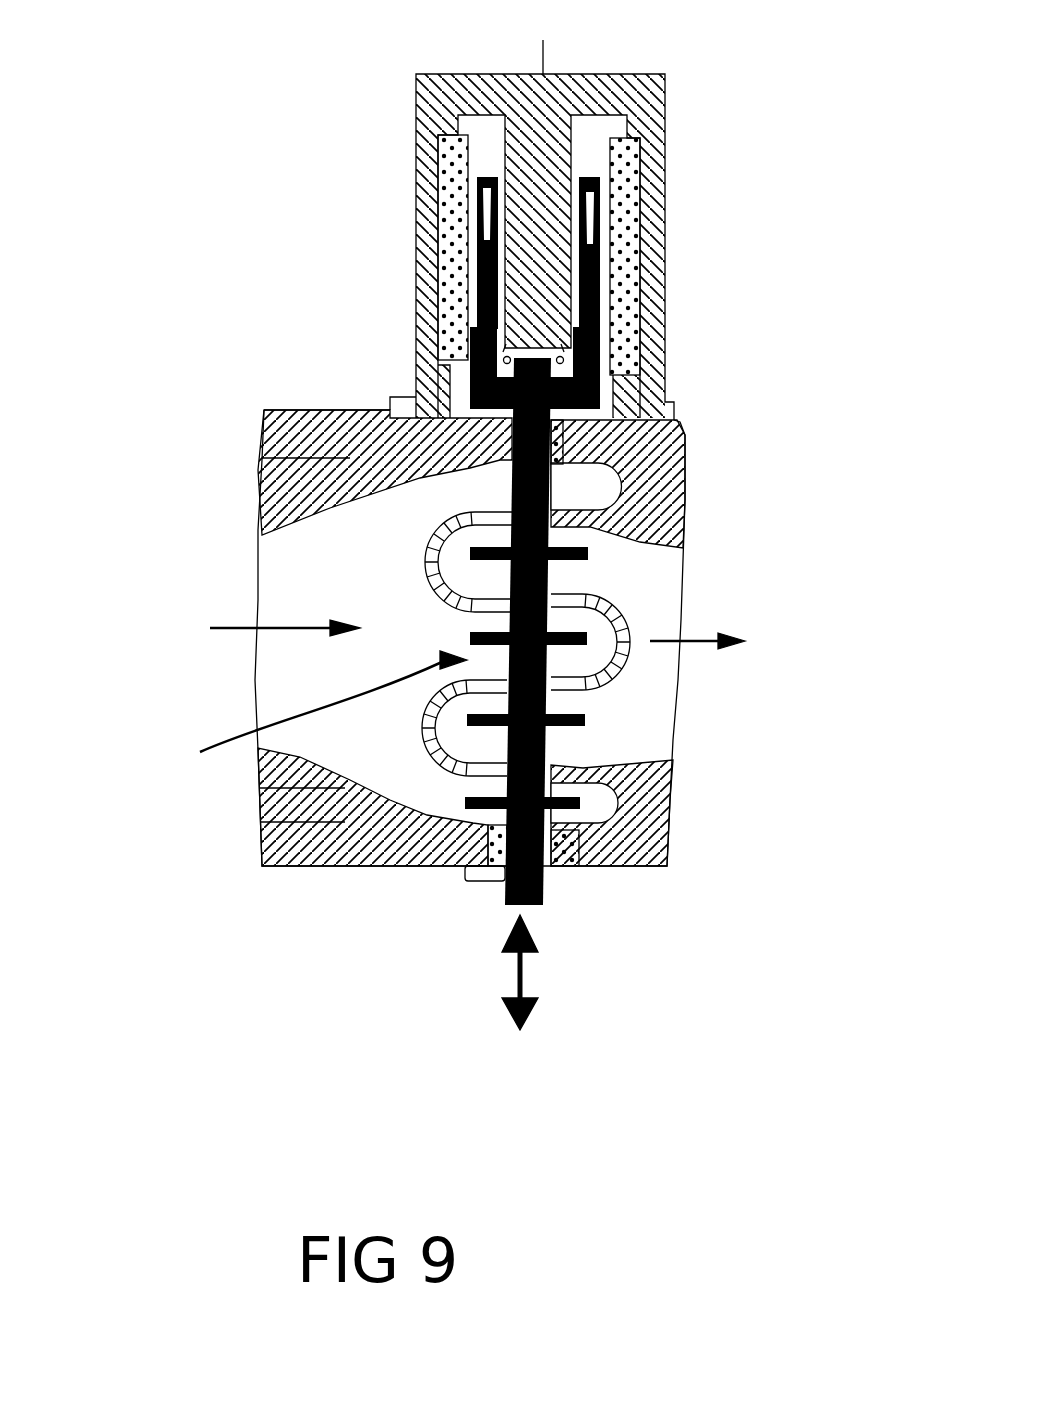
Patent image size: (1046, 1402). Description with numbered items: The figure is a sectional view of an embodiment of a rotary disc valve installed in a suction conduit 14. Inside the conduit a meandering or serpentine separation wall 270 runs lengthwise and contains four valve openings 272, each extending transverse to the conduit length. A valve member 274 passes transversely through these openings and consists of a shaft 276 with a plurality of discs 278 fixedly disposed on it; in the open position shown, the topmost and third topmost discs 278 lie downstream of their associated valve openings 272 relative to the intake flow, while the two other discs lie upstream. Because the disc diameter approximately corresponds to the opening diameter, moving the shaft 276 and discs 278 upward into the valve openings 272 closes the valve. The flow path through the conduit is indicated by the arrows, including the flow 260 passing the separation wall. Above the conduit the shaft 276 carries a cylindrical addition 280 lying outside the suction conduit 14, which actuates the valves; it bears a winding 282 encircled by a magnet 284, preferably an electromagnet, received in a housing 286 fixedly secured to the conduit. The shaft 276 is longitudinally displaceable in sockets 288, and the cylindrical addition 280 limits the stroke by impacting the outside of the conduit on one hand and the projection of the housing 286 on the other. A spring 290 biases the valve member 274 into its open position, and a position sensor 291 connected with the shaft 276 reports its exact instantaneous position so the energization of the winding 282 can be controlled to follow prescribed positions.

The suction conduit 14 is at (700, 495).
The fluid flow path 260 is at (287, 714).
The separation wall 270 is at (604, 677).
The valve openings 272 is at (578, 592).
The valve member 274 is at (572, 745).
The shaft 276 is at (350, 490).
The discs 278 is at (430, 548).
The cylindrical addition 280 is at (598, 360).
The winding 282 is at (598, 238).
The magnet 284 is at (630, 158).
The housing 286 is at (618, 77).
The sockets 288 is at (605, 432).
The spring 290 is at (495, 362).
The position sensor 291 is at (478, 882).